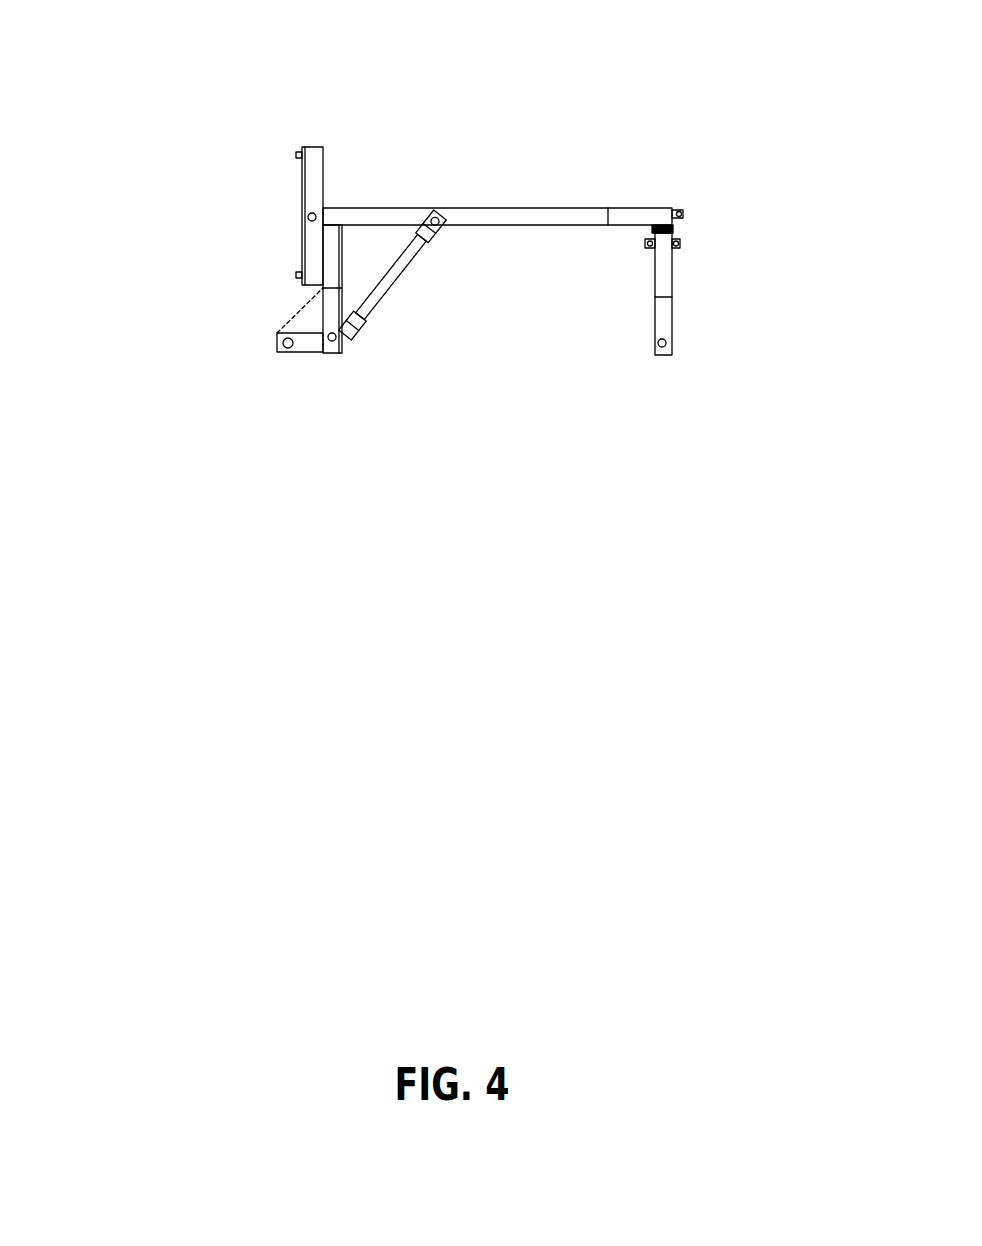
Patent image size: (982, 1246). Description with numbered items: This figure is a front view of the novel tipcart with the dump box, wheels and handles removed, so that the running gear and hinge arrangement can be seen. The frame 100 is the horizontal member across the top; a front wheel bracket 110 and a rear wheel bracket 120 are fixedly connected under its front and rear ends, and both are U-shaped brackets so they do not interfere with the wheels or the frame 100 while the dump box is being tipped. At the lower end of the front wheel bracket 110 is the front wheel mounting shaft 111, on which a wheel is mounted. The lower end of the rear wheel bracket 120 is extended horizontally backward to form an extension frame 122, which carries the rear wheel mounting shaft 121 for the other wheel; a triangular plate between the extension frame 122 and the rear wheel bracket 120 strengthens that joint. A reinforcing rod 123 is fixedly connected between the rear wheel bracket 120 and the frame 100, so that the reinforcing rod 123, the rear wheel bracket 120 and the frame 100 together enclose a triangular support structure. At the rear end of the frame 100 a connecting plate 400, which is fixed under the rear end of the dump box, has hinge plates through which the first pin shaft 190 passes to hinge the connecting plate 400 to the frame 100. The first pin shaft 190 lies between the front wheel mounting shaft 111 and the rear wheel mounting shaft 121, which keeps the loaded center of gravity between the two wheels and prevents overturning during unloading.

The frame 100 is at (526, 144).
The front wheel bracket 110 is at (788, 322).
The front wheel mounting shaft 111 is at (761, 438).
The rear wheel bracket 120 is at (208, 259).
The rear wheel mounting shaft 121 is at (190, 348).
The extension frame 122 is at (186, 444).
The reinforcing rod 123 is at (470, 320).
The first pin shaft 190 is at (199, 165).
The connecting plate 400 is at (413, 152).